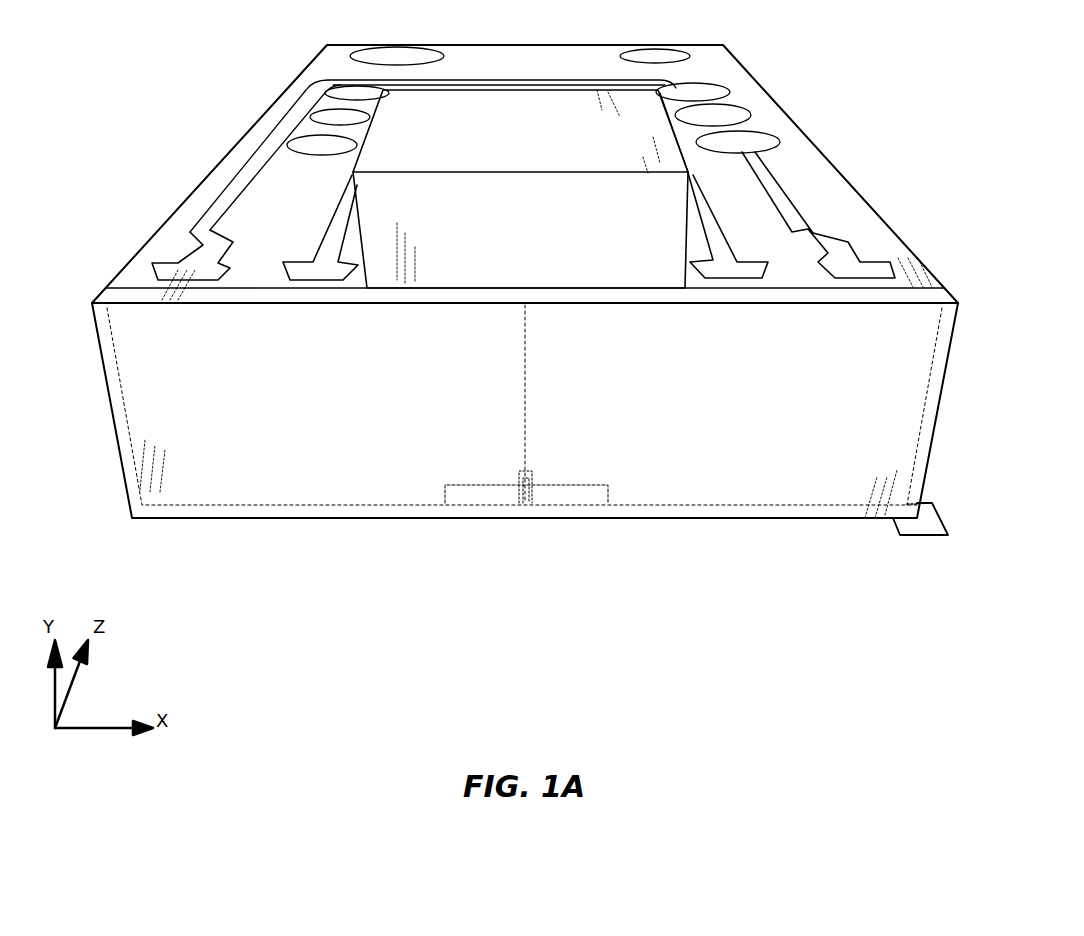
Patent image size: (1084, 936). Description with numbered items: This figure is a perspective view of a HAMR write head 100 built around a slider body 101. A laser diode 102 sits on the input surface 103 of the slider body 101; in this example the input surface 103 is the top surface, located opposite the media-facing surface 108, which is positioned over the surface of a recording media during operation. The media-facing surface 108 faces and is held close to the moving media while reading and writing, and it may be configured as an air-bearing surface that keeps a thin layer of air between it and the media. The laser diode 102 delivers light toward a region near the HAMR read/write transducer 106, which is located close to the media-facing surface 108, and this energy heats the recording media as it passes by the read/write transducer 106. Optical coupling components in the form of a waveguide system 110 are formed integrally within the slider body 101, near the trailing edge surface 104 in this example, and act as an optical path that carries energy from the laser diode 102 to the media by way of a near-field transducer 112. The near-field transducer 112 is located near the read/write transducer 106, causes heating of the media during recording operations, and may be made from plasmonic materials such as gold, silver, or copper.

The HAMR write head 100 is at (833, 122).
The slider body 101 is at (299, 73).
The laser diode 102 is at (475, 102).
The input surface 103 is at (163, 245).
The trailing edge surface 104 is at (200, 490).
The HAMR read/write transducer 106 is at (532, 503).
The media-facing surface 108 is at (938, 540).
The waveguide system 110 is at (527, 385).
The near-field transducer 112 is at (525, 505).